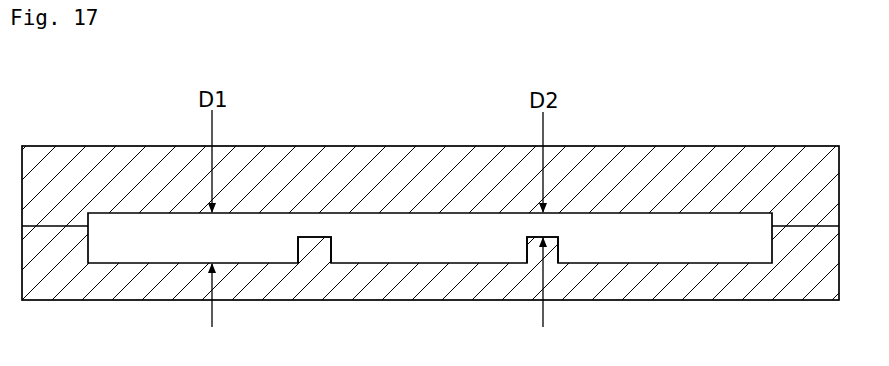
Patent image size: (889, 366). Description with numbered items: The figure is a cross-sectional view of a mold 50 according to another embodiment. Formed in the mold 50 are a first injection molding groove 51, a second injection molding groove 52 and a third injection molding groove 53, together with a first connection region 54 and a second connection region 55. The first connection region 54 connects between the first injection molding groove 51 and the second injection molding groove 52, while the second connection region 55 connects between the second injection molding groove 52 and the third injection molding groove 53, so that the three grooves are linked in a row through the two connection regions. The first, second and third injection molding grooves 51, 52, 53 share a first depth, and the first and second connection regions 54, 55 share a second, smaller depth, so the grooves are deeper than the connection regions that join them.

The mold 50 is at (812, 125).
The first injection molding groove 51 is at (171, 249).
The second injection molding groove 52 is at (409, 251).
The third injection molding groove 53 is at (654, 251).
The first connection region 54 is at (328, 228).
The second connection region 55 is at (531, 228).